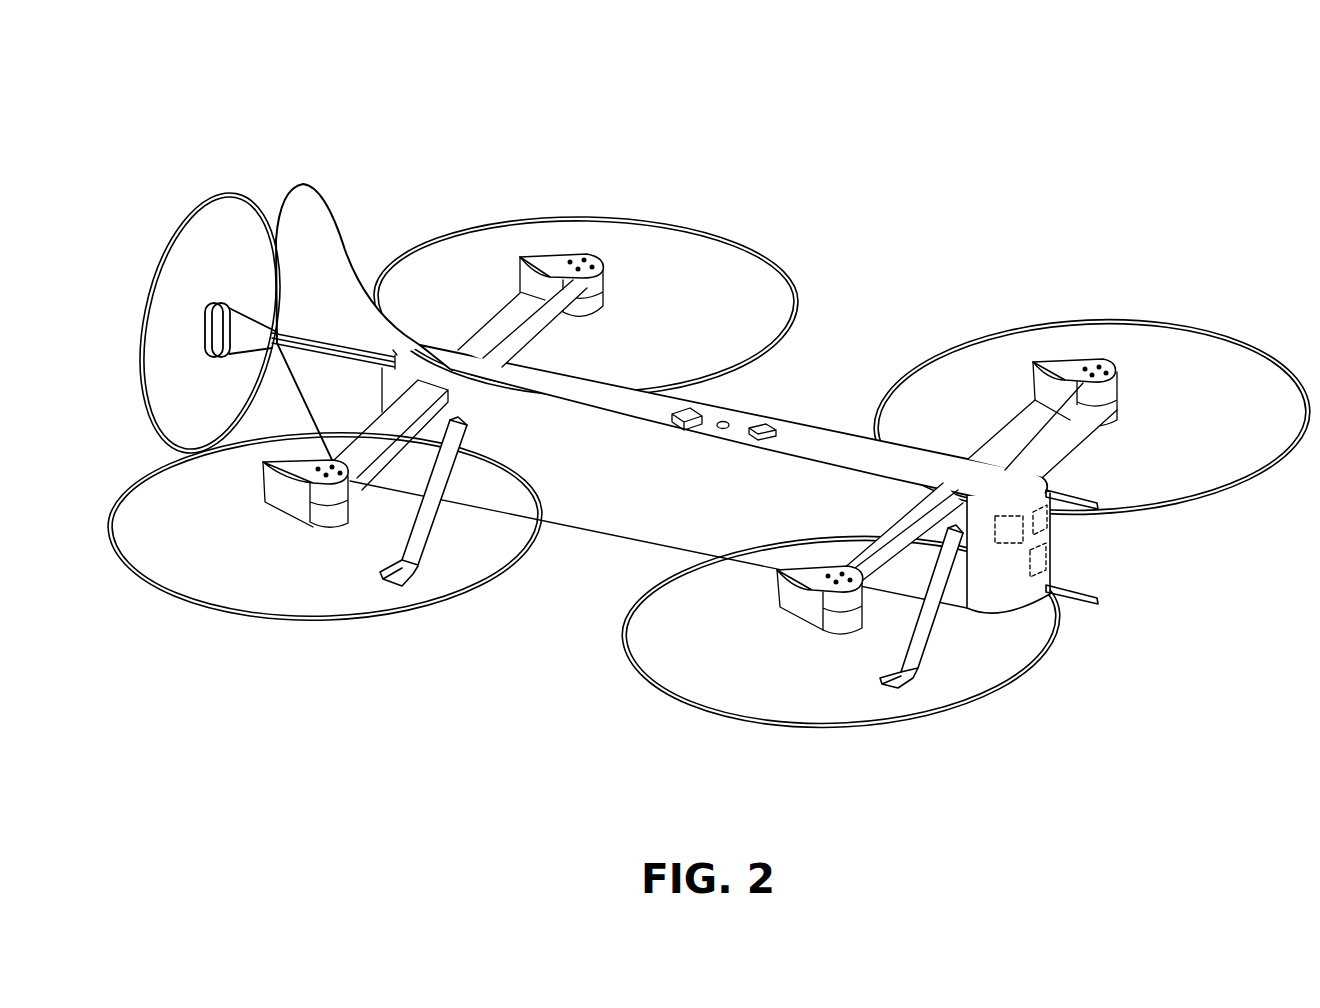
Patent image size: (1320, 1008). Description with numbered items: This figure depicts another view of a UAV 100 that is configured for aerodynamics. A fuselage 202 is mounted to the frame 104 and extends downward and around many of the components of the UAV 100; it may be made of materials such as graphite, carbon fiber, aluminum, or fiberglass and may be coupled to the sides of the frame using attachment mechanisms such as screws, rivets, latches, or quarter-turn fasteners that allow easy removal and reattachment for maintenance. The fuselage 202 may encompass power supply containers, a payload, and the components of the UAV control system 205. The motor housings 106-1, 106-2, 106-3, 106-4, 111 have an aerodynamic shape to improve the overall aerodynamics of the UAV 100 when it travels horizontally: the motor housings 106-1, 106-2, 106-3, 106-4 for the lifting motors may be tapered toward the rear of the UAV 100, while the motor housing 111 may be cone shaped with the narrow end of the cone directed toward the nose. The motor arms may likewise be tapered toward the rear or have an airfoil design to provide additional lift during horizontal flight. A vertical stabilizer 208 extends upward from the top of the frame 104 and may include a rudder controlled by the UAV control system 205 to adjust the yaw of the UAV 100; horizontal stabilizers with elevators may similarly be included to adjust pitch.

The UAV 100 is at (1163, 115).
The frame 104 is at (788, 432).
The motor housing 106-1 is at (1071, 367).
The motor housing 106-2 is at (802, 608).
The motor housing 106-3 is at (290, 497).
The motor housing 106-4 is at (578, 263).
The motor housing 111 is at (240, 320).
The fuselage 202 is at (1053, 585).
The UAV control system 205 is at (1053, 513).
The vertical stabilizer 208 is at (300, 213).